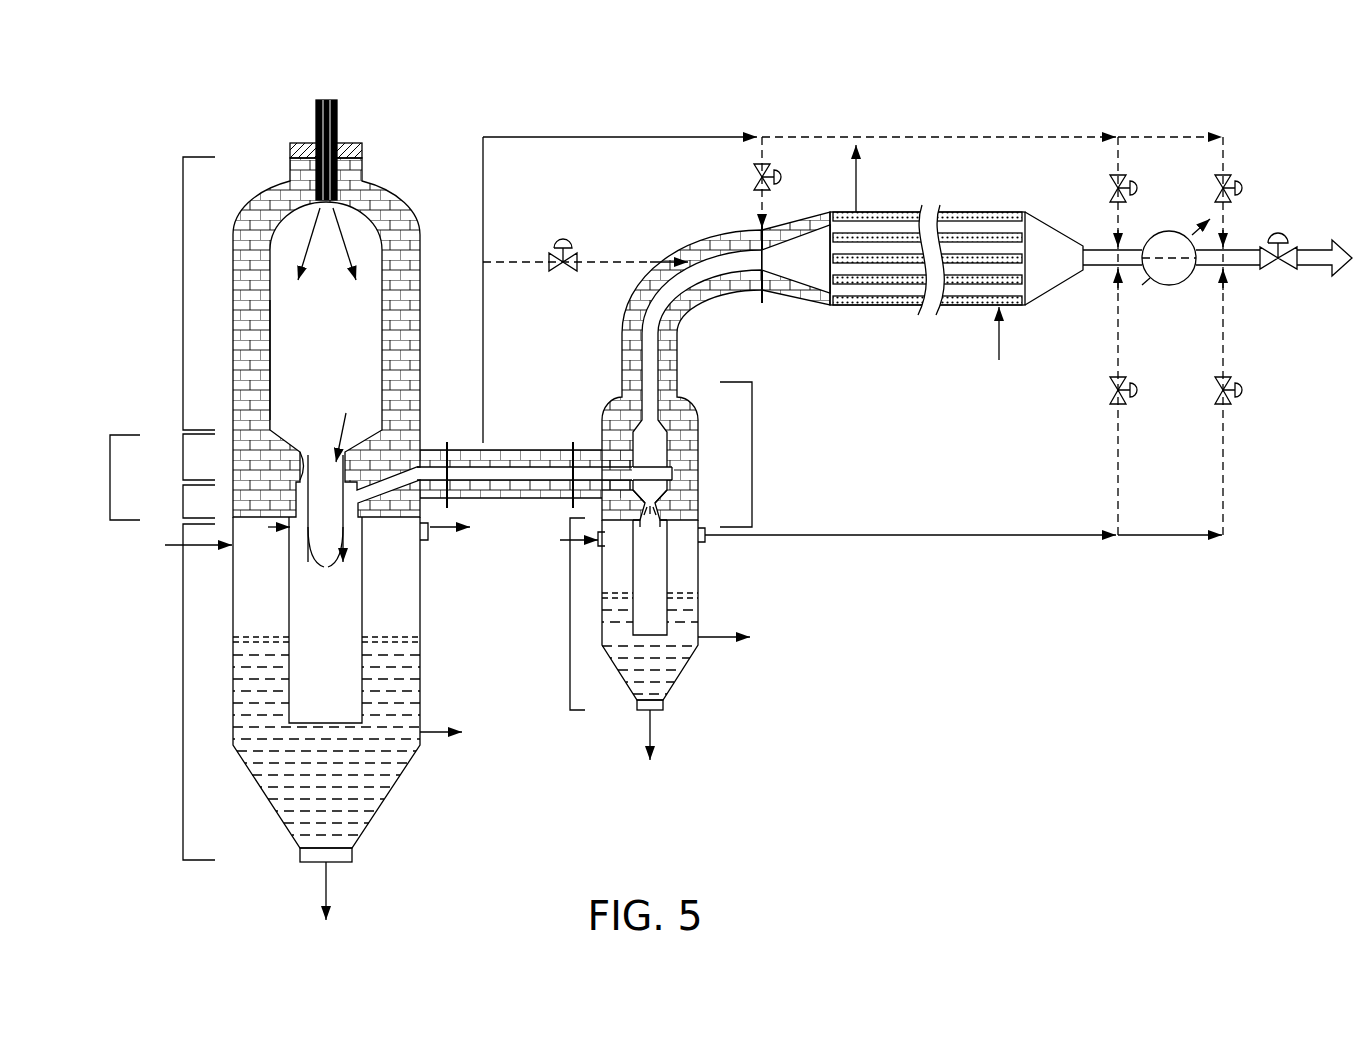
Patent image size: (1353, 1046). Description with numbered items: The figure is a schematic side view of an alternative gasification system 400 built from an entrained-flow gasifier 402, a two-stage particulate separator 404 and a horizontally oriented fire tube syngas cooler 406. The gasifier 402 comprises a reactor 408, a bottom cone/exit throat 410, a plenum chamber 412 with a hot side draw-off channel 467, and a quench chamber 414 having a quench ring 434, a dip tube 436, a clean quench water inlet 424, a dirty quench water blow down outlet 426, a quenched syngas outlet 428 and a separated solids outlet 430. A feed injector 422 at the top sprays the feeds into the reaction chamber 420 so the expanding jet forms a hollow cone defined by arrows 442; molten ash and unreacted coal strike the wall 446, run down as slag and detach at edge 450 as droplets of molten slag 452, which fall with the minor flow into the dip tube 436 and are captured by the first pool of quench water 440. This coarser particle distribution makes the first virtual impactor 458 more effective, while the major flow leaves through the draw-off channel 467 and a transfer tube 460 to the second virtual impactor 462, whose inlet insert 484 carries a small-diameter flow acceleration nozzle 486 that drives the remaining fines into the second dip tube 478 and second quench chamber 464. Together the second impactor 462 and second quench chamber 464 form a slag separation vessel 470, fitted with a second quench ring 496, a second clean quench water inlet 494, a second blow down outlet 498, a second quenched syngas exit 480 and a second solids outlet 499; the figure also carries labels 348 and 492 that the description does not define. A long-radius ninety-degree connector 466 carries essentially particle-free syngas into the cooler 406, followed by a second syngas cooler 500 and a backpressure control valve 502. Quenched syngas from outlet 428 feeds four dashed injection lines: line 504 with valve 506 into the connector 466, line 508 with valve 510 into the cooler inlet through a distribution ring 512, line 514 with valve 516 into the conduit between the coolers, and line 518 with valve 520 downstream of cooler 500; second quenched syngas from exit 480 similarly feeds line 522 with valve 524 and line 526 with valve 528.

The gasification system 400 is at (160, 122).
The entrained-flow gasifier 402 is at (272, 505).
The two-stage particulate separator 404 is at (707, 371).
The fire tube syngas cooler 406 is at (888, 205).
The reactor 408 is at (183, 277).
The bottom cone/exit throat 410 is at (183, 460).
The plenum chamber 412 is at (183, 500).
The quench chamber 414 is at (183, 670).
The reaction chamber 420 is at (348, 215).
The feed injector 422 is at (316, 110).
The clean quench water inlet 424 is at (170, 550).
The dirty quench water blow down outlet 426 is at (440, 730).
The quenched syngas outlet 428 is at (440, 530).
The quenched, separated solids outlet 430 is at (328, 886).
The quench ring 434 is at (288, 555).
The dip tube 436 is at (292, 613).
The first pool of quench water 440 is at (387, 682).
The arrows 442 is at (340, 245).
The wall 446 is at (272, 369).
The edge 450 is at (307, 455).
The droplets of molten slag 452 is at (327, 560).
The syngas stream 348 is at (348, 423).
The first virtual impactor 458 is at (110, 470).
The transfer tube 460 is at (494, 448).
The second virtual impactor 462 is at (752, 413).
The second quench chamber 464 is at (570, 625).
The connector 466 is at (688, 250).
The side draw-off channel 467 is at (392, 482).
The slag separation vessel 470 is at (676, 639).
The second dip tube 478 is at (635, 607).
The second quenched syngas exit 480 is at (710, 538).
The inlet insert 484 is at (645, 465).
The flow acceleration nozzle 486 is at (670, 493).
The dip tube 492 is at (688, 616).
The second clean quench water inlet 494 is at (560, 540).
The second quench ring 496 is at (667, 535).
The second dirty quench water blow down outlet 498 is at (714, 640).
The second quenched, separated solids outlet 499 is at (650, 730).
The second syngas cooler 500 is at (1180, 285).
The control valve 502 is at (1279, 233).
The injection line 504 is at (615, 263).
The flow control valve 506 is at (563, 240).
The injection line 508 is at (760, 215).
The flow control valve 510 is at (753, 180).
The distribution ring 512 is at (763, 292).
The injection line 514 is at (1115, 210).
The flow control valve 516 is at (1110, 183).
The injection line 518 is at (1219, 210).
The flow control valve 520 is at (1215, 183).
The injection line 522 is at (1118, 462).
The flow control valve 524 is at (1110, 390).
The injection line 526 is at (1223, 462).
The flow control valve 528 is at (1215, 390).